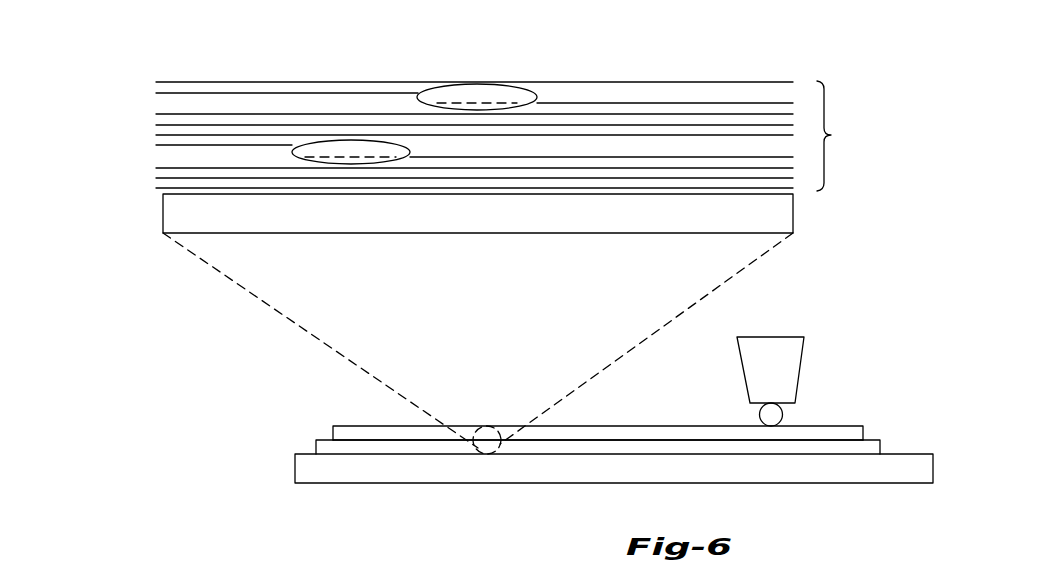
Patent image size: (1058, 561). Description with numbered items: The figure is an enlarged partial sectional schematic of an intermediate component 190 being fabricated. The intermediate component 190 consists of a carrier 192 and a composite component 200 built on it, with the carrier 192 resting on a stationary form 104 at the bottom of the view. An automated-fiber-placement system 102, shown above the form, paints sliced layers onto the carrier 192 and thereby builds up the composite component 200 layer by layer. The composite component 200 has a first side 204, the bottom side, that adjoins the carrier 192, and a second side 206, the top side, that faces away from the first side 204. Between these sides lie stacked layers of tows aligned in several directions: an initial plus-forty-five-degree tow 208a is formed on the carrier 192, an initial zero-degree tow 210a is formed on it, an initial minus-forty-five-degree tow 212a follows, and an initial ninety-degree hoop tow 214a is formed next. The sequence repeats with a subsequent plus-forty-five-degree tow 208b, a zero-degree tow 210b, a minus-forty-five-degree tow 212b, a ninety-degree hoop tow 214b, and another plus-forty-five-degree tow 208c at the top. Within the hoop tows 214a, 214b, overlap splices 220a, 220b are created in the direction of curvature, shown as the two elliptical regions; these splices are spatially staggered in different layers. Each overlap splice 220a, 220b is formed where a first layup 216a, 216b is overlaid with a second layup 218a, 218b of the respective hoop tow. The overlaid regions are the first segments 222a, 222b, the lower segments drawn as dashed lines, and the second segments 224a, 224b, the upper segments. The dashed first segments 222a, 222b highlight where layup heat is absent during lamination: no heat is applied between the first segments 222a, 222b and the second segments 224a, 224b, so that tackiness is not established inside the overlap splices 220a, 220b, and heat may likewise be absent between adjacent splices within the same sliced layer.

The automated-fiber-placement system 102 is at (782, 337).
The stationary form 104 is at (295, 467).
The intermediate component 190 is at (289, 426).
The carrier 192 is at (793, 213).
The composite component 200 is at (849, 136).
The first side 204 is at (732, 200).
The second side 206 is at (715, 72).
The +45-degree tow 208a is at (158, 188).
The +45-degree tow 208b is at (158, 135).
The +45-degree tow 208c is at (158, 82).
The 0-degree tow 210a is at (158, 178).
The 0-degree tow 210b is at (158, 125).
The −45-degree tow 212a is at (158, 168).
The −45-degree tow 212b is at (158, 114).
The hoop tow 214a is at (158, 145).
The hoop tow 214b is at (158, 93).
The first layup 216a is at (612, 156).
The first layup 216b is at (645, 103).
The second layup 218a is at (240, 147).
The second layup 218b is at (224, 93).
The overlap splice 220a is at (350, 165).
The overlap splice 220b is at (506, 82).
The first segment 222a is at (320, 157).
The first segment 222b is at (443, 103).
The second segment 224a is at (385, 144).
The second segment 224b is at (462, 95).